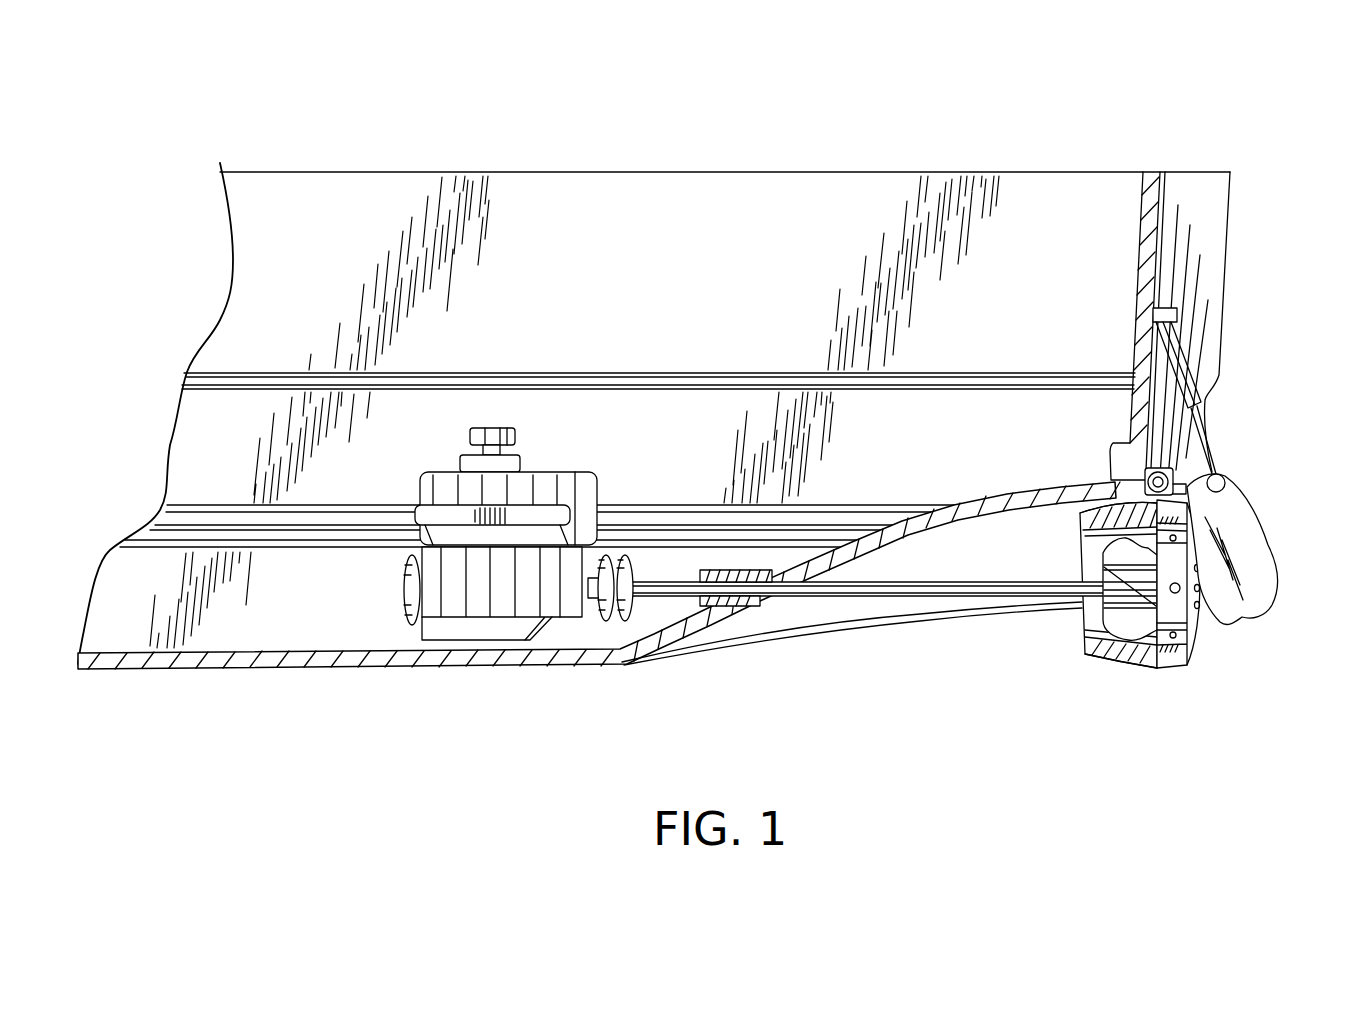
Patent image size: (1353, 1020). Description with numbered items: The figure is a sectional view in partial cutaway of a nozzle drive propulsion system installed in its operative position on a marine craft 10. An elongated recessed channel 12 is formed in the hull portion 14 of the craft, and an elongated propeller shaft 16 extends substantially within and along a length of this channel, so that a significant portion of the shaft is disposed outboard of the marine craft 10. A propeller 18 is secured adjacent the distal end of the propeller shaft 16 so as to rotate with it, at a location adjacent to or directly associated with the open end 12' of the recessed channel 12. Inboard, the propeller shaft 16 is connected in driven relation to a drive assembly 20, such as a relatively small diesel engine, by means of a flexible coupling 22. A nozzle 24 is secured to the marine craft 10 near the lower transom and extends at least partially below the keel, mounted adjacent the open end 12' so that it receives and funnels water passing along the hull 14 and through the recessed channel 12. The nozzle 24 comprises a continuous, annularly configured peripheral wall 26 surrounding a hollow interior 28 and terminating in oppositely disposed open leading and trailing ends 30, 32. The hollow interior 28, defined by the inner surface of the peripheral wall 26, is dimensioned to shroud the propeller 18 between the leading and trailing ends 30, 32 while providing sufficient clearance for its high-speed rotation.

The marine craft 10 is at (561, 155).
The recessed channel 12 is at (852, 670).
The open end 12' is at (1094, 457).
The hull portion 14 is at (458, 672).
The propeller shaft 16 is at (882, 588).
The propeller 18 is at (1132, 660).
The drive assembly 20 is at (537, 426).
The flexible coupling 22 is at (626, 622).
The nozzle 24 is at (1186, 685).
The peripheral wall 26 is at (1102, 660).
The hollow interior 28 is at (1090, 558).
The leading end 30 is at (1085, 625).
The trailing end 32 is at (1197, 628).